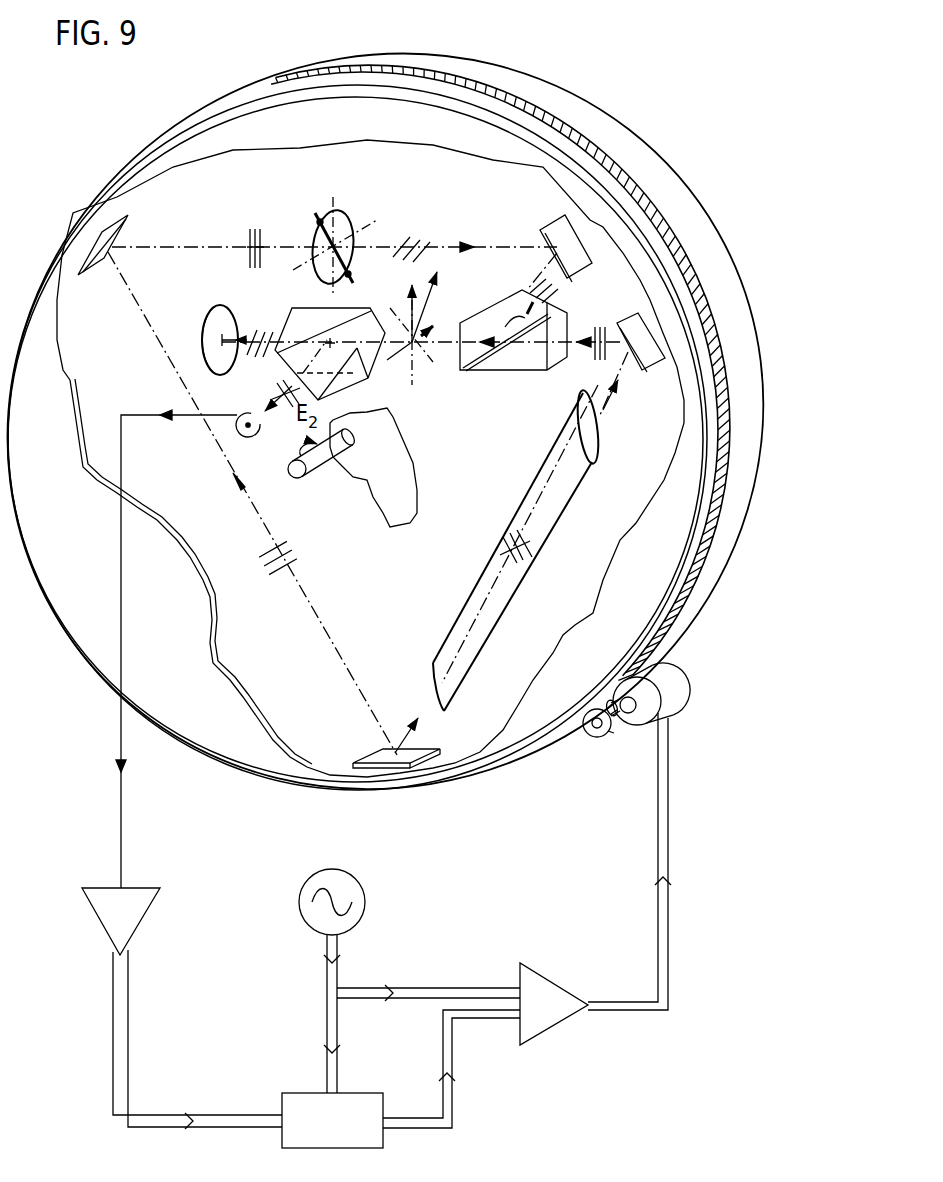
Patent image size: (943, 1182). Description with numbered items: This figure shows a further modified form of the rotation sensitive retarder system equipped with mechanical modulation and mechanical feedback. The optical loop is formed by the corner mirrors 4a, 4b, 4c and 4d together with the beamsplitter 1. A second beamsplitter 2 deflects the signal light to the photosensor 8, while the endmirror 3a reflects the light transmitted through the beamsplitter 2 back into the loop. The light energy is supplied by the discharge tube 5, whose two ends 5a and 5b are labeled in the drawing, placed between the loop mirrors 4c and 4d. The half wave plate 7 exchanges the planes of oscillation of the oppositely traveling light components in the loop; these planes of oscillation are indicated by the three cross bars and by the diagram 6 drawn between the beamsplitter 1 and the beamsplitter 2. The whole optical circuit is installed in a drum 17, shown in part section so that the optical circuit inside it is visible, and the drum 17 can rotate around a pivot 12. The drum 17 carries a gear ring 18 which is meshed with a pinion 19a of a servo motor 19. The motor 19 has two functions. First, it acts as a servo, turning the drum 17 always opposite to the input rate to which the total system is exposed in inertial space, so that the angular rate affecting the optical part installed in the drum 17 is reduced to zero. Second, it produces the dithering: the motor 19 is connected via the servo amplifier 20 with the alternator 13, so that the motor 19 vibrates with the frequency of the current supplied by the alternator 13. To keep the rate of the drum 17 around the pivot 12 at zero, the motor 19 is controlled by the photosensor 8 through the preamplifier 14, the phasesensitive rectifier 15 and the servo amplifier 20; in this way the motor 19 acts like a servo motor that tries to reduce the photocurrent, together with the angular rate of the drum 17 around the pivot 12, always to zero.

The beamsplitter 1 is at (513, 343).
The beamsplitter 2 is at (322, 359).
The endmirror 3a is at (211, 336).
The corner mirror 4a is at (552, 236).
The corner mirror 4b is at (117, 239).
The corner mirror 4c is at (389, 744).
The corner mirror 4d is at (642, 357).
The discharge tube 5 is at (514, 569).
The tube end 5a is at (603, 427).
The tube end 5b is at (406, 701).
The diagram 6 is at (406, 357).
The half wave plate 7 is at (333, 210).
The photosensor 8 is at (188, 649).
The pivot 12 is at (319, 466).
The alternator 13 is at (350, 902).
The preamplifier 14 is at (121, 921).
The phasesensitive rectifier 15 is at (332, 1120).
The drum 17 is at (364, 458).
The gear ring 18 is at (680, 598).
The servo motor 19 is at (658, 695).
The pinion 19a is at (600, 741).
The servo amplifier 20 is at (554, 1004).